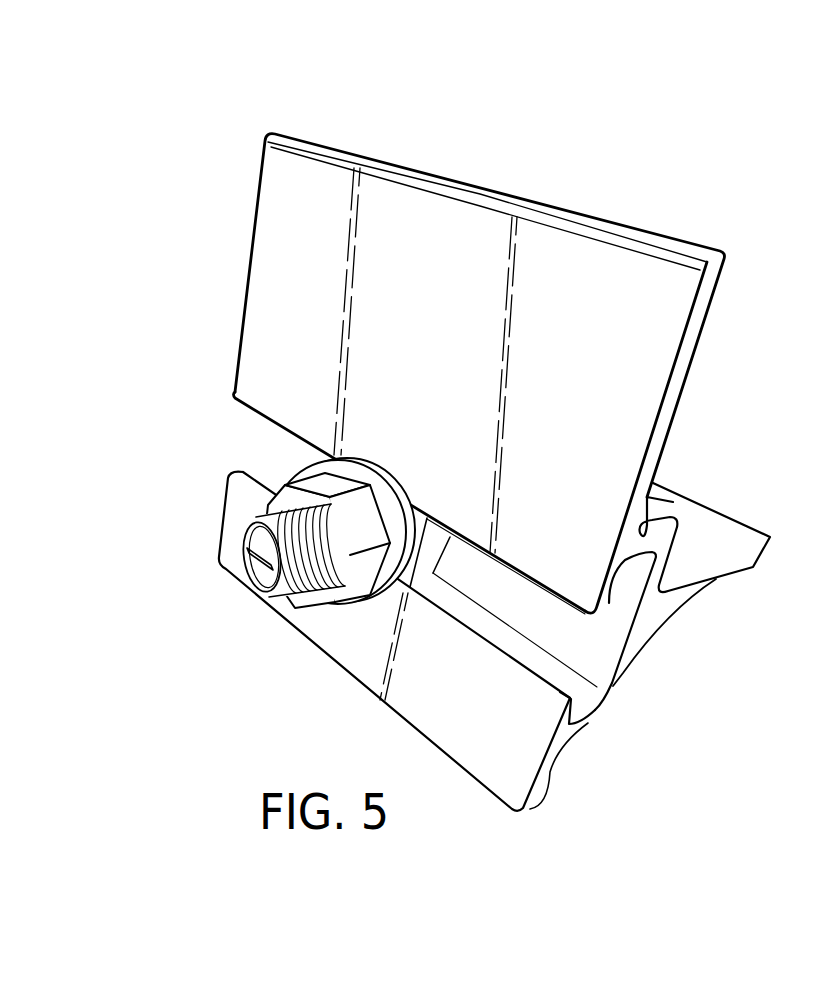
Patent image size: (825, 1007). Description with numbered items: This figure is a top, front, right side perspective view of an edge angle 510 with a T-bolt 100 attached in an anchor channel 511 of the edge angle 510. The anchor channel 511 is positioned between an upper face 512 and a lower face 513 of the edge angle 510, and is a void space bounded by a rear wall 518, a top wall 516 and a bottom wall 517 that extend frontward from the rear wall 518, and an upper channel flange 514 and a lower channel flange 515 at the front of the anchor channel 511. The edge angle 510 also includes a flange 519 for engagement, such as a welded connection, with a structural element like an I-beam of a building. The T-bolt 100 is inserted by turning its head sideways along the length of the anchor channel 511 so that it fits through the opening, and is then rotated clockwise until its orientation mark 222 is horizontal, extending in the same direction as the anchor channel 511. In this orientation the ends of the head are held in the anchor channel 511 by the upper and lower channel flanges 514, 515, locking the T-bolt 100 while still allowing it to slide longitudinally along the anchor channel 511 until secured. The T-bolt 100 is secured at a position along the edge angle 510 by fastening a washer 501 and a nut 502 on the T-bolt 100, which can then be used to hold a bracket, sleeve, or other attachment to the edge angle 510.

The T-bolt 100 is at (238, 600).
The orientation mark 222 is at (253, 560).
The washer 501 is at (353, 460).
The nut 502 is at (320, 482).
The edge angle 510 is at (524, 368).
The anchor channel 511 is at (444, 617).
The upper face 512 is at (662, 332).
The lower face 513 is at (520, 780).
The upper channel flange 514 is at (577, 598).
The lower channel flange 515 is at (558, 703).
The top wall 516 is at (648, 540).
The bottom wall 517 is at (585, 726).
The rear wall 518 is at (623, 673).
The flange 519 is at (710, 578).